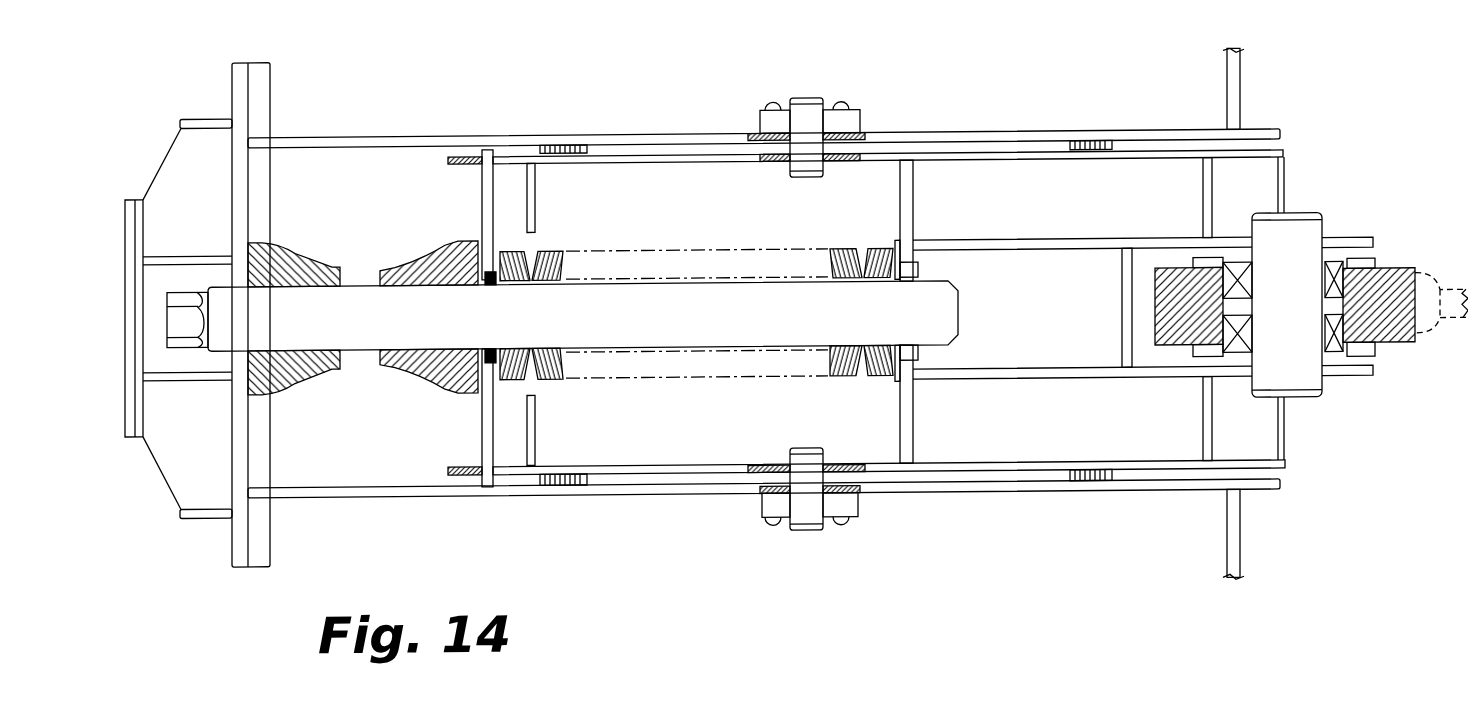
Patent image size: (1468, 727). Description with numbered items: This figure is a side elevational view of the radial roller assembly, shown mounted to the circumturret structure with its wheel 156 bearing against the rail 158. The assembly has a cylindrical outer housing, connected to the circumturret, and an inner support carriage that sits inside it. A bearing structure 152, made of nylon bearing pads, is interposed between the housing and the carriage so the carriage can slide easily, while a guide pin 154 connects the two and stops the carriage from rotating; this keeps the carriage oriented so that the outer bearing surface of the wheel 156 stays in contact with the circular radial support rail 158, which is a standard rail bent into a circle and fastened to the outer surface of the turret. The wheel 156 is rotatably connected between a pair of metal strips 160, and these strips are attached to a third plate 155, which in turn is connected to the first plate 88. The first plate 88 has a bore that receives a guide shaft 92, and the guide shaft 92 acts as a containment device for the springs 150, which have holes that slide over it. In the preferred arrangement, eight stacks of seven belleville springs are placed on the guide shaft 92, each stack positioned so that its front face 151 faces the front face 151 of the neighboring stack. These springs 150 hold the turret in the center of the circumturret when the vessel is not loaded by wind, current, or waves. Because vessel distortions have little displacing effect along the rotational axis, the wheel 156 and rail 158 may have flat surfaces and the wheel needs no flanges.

The first plate 88 is at (910, 442).
The guide shaft 92 is at (660, 310).
The springs 150 is at (882, 250).
The front face 151 is at (863, 251).
The bearing structure 152 is at (560, 143).
The guide pin 154 is at (810, 130).
The third plate 155 is at (1135, 353).
The wheel 156 is at (1380, 342).
The radial support rail 158 is at (1428, 336).
The metal strips 160 is at (1050, 249).